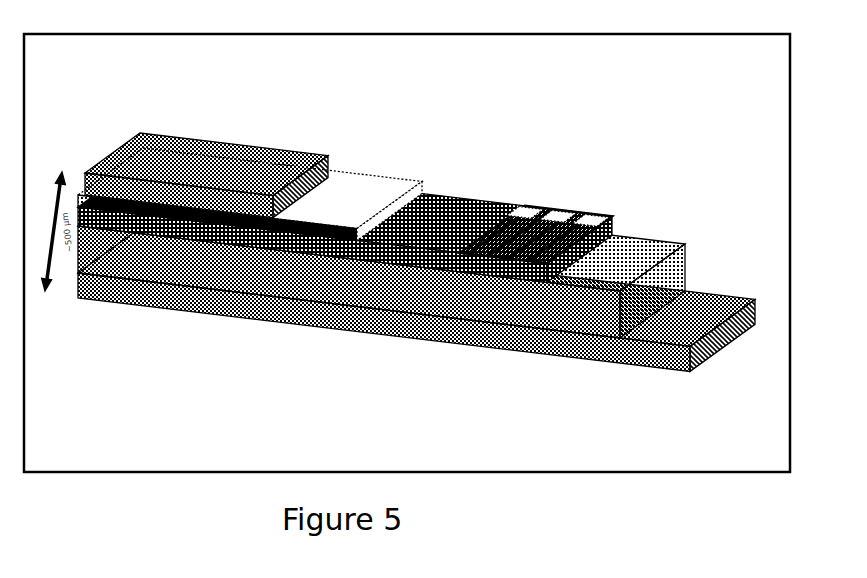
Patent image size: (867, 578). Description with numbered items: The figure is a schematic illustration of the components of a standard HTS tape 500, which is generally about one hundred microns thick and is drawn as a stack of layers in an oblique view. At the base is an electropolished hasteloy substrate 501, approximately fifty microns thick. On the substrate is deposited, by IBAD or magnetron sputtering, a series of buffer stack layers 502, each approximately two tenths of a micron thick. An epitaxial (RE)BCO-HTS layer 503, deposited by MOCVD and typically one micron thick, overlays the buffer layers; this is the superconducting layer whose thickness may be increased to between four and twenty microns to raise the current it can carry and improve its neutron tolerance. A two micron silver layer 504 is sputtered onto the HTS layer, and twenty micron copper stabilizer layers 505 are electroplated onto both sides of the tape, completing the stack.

The HTS tape 500 is at (255, 350).
The electropolished hasteloy substrate 501 is at (636, 262).
The buffer stack layers 502 is at (532, 212).
The epitaxial (RE)BCO-HTS layer 503 is at (417, 216).
The silver layer 504 is at (349, 200).
The copper stabilizer layers 505 is at (213, 165).